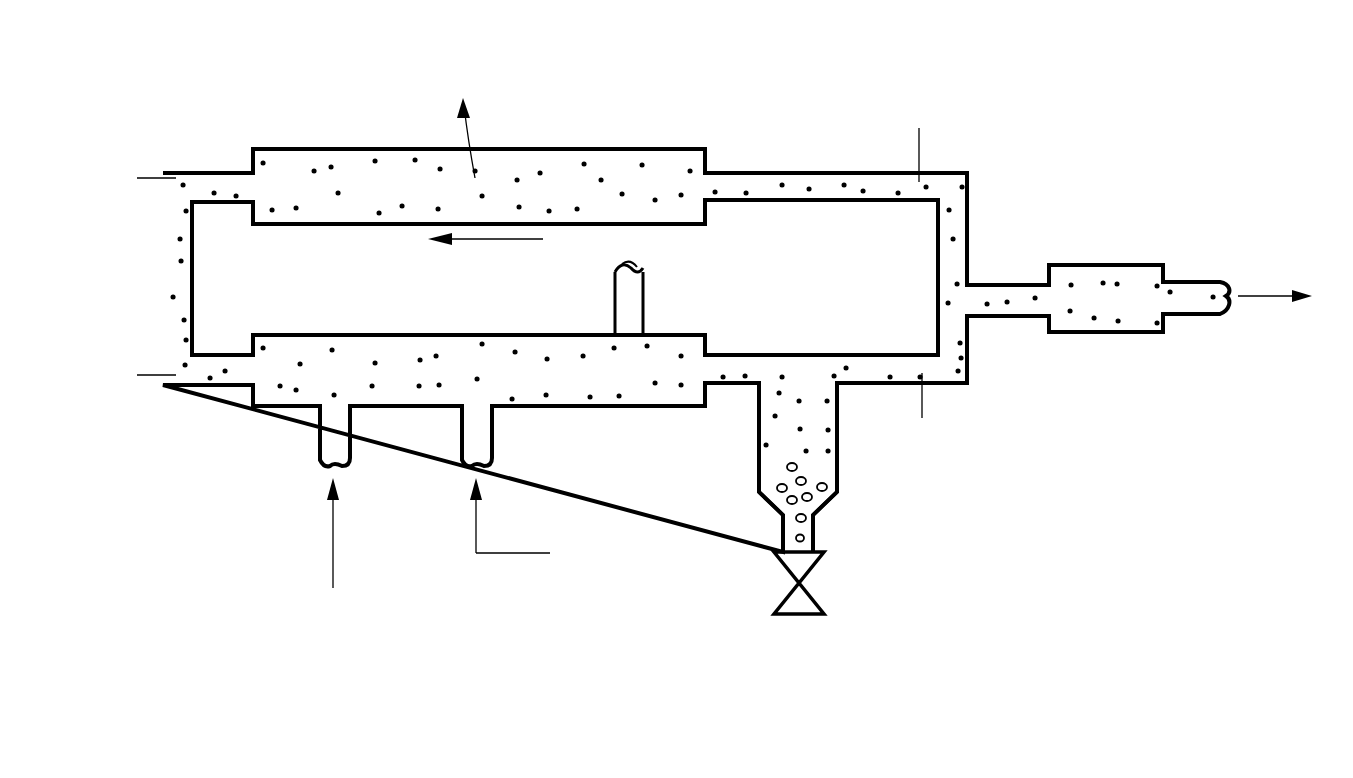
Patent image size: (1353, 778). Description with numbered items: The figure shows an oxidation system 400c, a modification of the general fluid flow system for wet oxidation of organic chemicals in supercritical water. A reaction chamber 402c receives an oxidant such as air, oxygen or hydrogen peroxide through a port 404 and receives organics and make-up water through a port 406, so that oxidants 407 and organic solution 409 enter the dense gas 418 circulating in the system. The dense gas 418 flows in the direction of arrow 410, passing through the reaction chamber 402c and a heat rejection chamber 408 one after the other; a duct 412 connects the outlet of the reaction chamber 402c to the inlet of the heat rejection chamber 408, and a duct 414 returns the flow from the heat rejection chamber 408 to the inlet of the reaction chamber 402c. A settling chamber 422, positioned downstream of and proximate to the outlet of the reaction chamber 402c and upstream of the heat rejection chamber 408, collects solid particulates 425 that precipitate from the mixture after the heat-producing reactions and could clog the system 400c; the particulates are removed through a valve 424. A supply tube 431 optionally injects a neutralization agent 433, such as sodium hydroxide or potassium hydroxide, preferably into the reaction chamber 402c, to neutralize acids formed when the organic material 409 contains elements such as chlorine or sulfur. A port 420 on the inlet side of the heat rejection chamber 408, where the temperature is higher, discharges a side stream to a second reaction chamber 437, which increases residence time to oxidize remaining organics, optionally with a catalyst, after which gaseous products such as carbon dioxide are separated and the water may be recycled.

The system 400c is at (662, 67).
The reaction chamber 402c is at (304, 410).
The port 404 is at (351, 446).
The port 406 is at (493, 446).
The oxidants 407 is at (333, 525).
The heat rejection chamber 408 is at (545, 149).
The organic solution 409 is at (476, 525).
The arrow 410 is at (470, 241).
The duct 412 is at (967, 230).
The duct 414 is at (163, 243).
The dense gas 418 is at (945, 268).
The port 420 is at (978, 318).
The settling chamber 422 is at (837, 488).
The valve 424 is at (793, 615).
The solid particulates 425 is at (805, 538).
The supply tube 431 is at (615, 313).
The neutralization agent 433 is at (648, 264).
The second reaction chamber 437 is at (1093, 265).